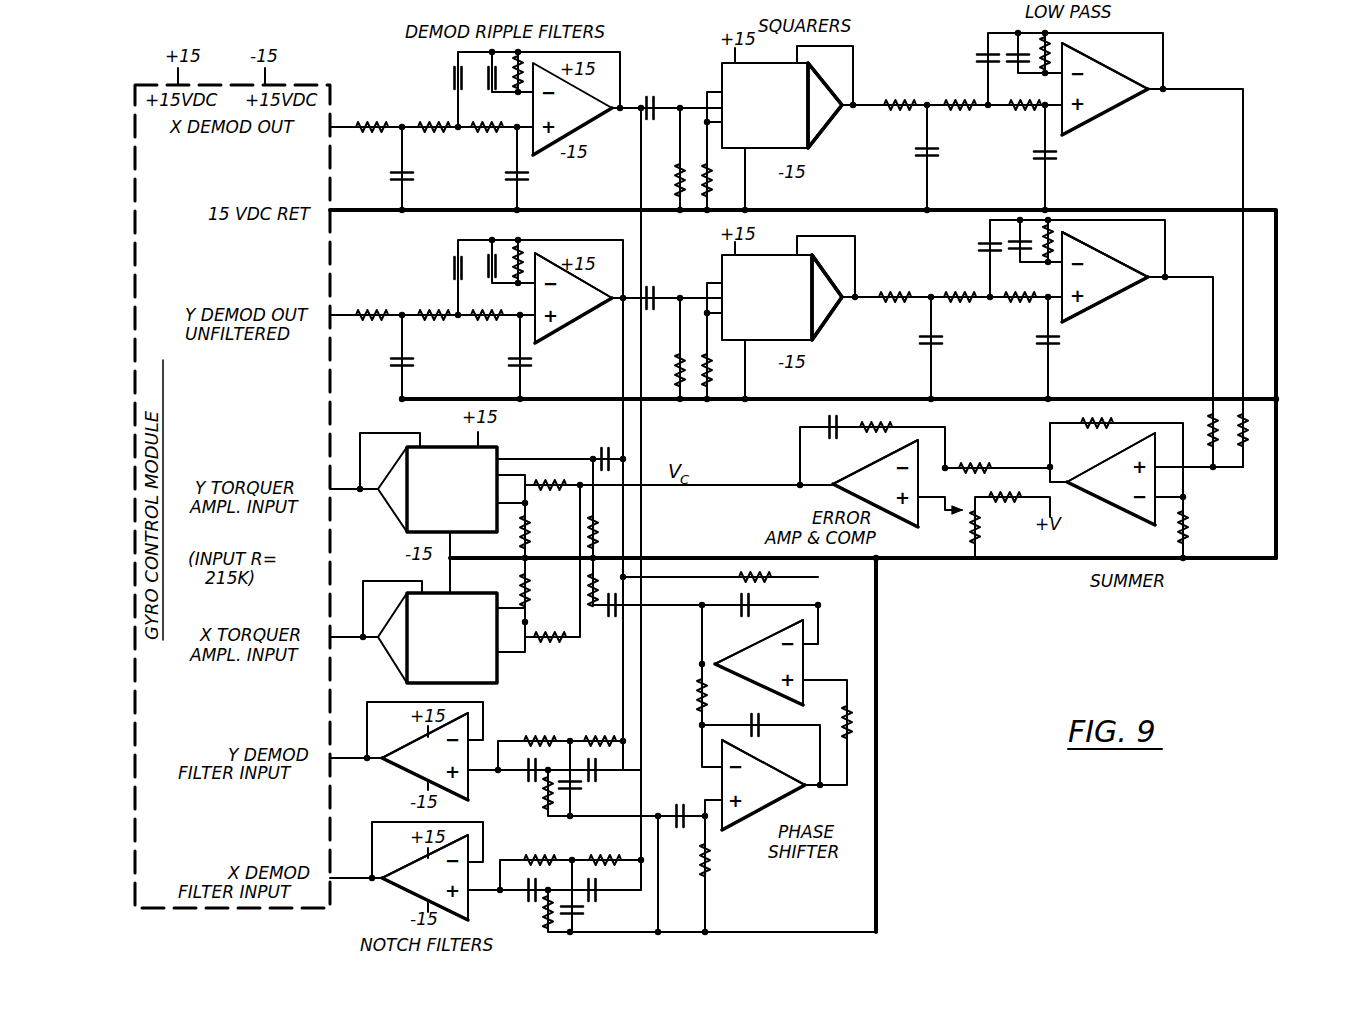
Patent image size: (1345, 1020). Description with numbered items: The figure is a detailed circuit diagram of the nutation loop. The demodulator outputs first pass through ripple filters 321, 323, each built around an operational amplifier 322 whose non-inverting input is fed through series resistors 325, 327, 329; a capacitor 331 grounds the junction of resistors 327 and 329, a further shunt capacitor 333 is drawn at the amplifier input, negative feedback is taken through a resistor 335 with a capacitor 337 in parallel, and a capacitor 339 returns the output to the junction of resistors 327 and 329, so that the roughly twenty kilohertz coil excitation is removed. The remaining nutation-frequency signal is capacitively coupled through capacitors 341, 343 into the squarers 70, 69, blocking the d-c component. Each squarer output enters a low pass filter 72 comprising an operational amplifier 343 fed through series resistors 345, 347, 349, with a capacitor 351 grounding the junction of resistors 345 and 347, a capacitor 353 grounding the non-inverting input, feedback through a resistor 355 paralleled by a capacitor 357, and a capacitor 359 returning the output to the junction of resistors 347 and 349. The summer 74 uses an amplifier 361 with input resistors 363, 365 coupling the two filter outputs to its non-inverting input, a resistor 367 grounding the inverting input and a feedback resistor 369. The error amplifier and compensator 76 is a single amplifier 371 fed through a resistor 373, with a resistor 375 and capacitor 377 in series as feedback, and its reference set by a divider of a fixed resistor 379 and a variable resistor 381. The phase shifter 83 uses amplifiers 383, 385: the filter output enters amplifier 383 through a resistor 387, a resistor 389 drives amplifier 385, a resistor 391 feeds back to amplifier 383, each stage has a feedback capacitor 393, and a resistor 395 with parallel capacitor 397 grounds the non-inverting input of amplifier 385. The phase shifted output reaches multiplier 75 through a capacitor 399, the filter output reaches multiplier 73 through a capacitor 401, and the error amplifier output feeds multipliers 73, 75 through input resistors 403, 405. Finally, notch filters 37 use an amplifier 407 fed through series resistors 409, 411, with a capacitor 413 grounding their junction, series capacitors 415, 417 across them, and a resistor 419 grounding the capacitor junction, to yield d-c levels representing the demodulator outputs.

The notch filters 37 is at (408, 862).
The squarer 69 is at (815, 318).
The squarer 70 is at (806, 115).
The low pass filter 72 is at (1125, 115).
The multiplier 73 is at (497, 447).
The summer 74 is at (1128, 515).
The multiplier 75 is at (500, 682).
The error amplifier 76 is at (878, 562).
The phase shifter 83 is at (878, 692).
The ripple filter 321 is at (458, 258).
The operational amplifier 322 is at (555, 330).
The ripple filter 323 is at (440, 92).
The resistor 325 is at (392, 308).
The resistor 327 is at (452, 308).
The resistor 329 is at (486, 312).
The capacitor 331 is at (410, 362).
The shunt capacitor 333 is at (528, 365).
The resistor 335 is at (525, 245).
The capacitor 337 is at (500, 262).
The capacitor 339 is at (466, 262).
The capacitor 341 is at (655, 290).
The capacitor / operational amplifier 343 is at (648, 102).
The resistor 345 is at (908, 290).
The resistor 347 is at (968, 290).
The resistor 349 is at (1028, 290).
The capacitor 351 is at (933, 340).
The capacitor 353 is at (1052, 343).
The resistor 355 is at (1060, 215).
The capacitor 357 is at (1019, 215).
The capacitor 359 is at (988, 245).
The amplifier 361 is at (1120, 438).
The input resistor 363 is at (1216, 447).
The input resistor 365 is at (1250, 440).
The resistor 367 is at (1190, 522).
The feedback resistor 369 is at (1096, 420).
The amplifier 371 is at (835, 495).
The resistor 373 is at (972, 465).
The resistor 375 is at (885, 425).
The capacitor 377 is at (825, 427).
The fixed resistor 379 is at (1020, 500).
The variable resistor 381 is at (968, 530).
The amplifier 383 is at (762, 650).
The amplifier 385 is at (755, 758).
The resistor 387 is at (745, 570).
The resistor 389 is at (707, 690).
The resistor 391 is at (860, 730).
The feedback capacitor 393 is at (735, 605).
The resistor 395 is at (708, 862).
The capacitor 397 is at (688, 812).
The capacitor 399 is at (615, 615).
The capacitor 401 is at (602, 450).
The input resistor 403 is at (560, 492).
The input resistor 405 is at (565, 645).
The amplifier 407 is at (418, 745).
The resistor 409 is at (545, 738).
The resistor 411 is at (605, 738).
The capacitor 413 is at (576, 786).
The capacitor 415 is at (522, 775).
The capacitor 417 is at (605, 768).
The resistor 419 is at (545, 805).